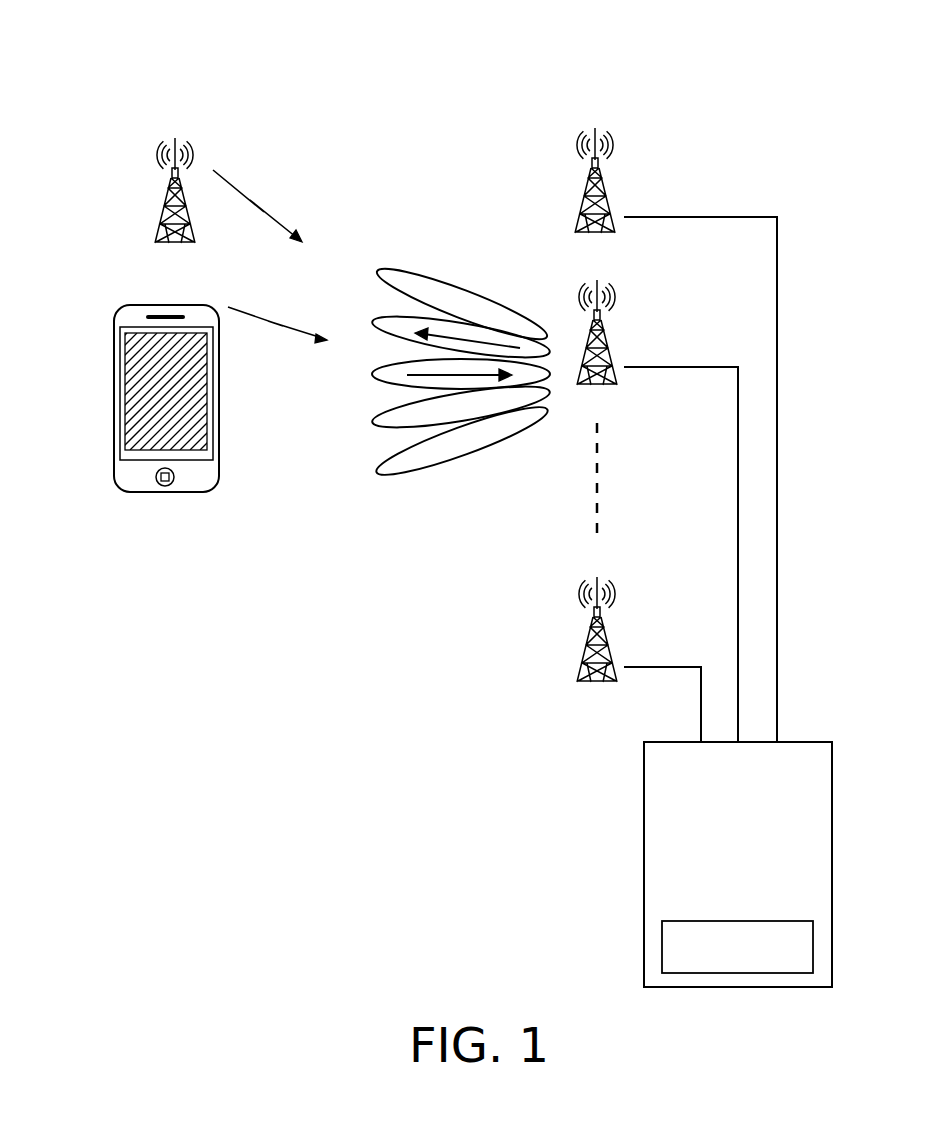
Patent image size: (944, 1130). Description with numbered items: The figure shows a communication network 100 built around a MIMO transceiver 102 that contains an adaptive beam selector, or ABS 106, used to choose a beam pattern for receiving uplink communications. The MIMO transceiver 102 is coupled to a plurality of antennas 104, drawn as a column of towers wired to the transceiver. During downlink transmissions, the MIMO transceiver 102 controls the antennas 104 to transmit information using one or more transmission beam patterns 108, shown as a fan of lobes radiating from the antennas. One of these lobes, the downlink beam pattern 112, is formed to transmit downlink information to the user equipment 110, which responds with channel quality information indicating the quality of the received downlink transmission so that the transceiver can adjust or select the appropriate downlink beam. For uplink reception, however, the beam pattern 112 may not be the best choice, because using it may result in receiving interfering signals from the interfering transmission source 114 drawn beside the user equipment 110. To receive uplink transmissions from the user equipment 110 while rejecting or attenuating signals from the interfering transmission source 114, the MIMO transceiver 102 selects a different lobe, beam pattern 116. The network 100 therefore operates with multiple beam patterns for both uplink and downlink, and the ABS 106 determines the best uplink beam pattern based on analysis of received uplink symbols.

The communication network 100 is at (775, 70).
The MIMO transceiver 102 is at (644, 790).
The antennas 104 is at (595, 112).
The adaptive beam selector (ABS) 106 is at (662, 942).
The transmission beam patterns 108 is at (423, 344).
The user equipment 110 is at (115, 355).
The downlink beam pattern 112 is at (375, 321).
The interfering transmission source 114 is at (130, 175).
The beam pattern 116 is at (375, 374).